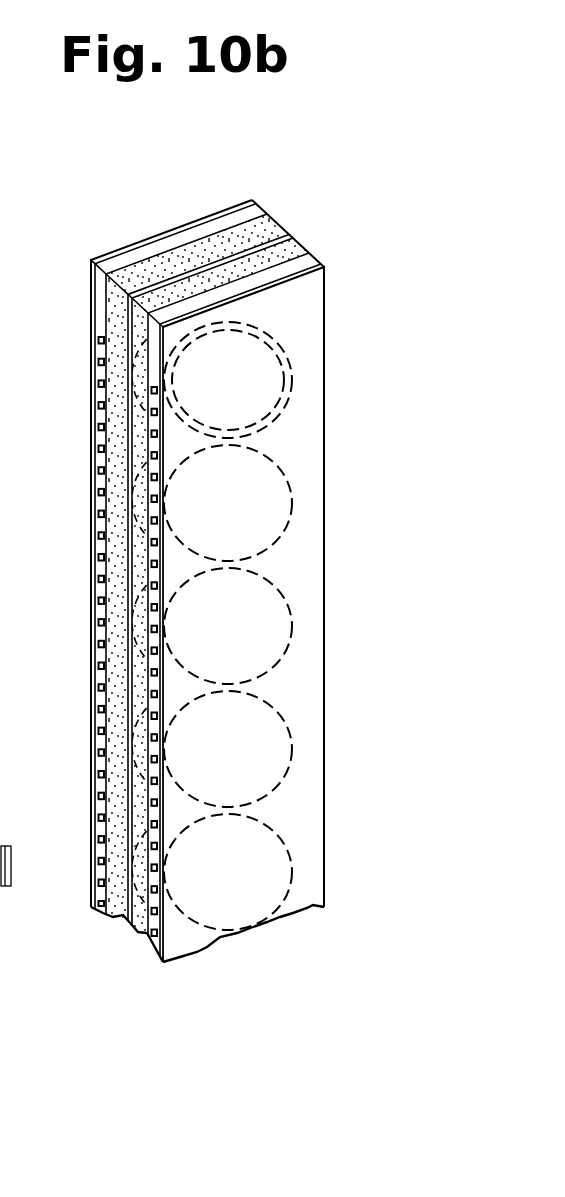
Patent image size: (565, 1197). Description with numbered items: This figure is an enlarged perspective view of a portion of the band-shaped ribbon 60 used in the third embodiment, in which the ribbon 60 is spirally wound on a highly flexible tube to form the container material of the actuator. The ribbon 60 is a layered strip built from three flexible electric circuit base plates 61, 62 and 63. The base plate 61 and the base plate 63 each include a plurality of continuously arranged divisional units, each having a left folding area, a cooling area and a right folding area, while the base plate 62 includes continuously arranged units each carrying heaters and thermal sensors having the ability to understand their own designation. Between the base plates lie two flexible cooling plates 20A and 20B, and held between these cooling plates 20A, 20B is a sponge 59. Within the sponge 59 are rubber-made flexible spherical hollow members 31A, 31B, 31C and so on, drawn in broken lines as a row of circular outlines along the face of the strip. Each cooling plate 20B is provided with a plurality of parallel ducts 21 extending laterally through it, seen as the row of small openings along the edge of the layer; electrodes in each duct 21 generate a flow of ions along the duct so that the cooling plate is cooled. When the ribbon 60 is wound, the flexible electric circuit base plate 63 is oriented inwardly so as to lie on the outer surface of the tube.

The ribbon 60 is at (229, 535).
The flexible electric circuit base plate 63 is at (313, 313).
The flexible electric circuit base plate 62 is at (130, 248).
The flexible electric circuit base plate 61 is at (288, 237).
The sponge 59 is at (292, 255).
The flexible cooling plate 20A is at (174, 511).
The cooling plate 20B is at (312, 257).
The duct 21 is at (97, 337).
The flexible spherical hollow member 31A is at (273, 405).
The flexible spherical hollow member 31B is at (285, 515).
The flexible spherical hollow member 31C is at (283, 638).